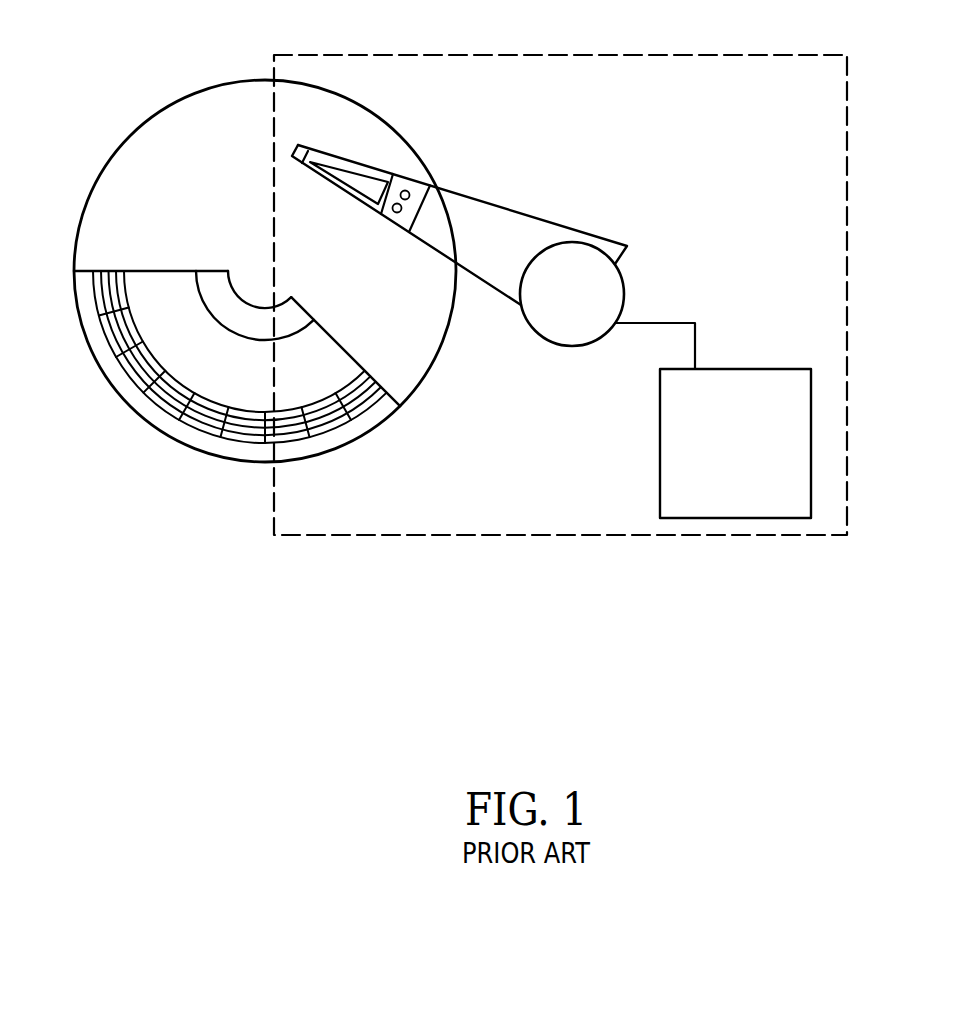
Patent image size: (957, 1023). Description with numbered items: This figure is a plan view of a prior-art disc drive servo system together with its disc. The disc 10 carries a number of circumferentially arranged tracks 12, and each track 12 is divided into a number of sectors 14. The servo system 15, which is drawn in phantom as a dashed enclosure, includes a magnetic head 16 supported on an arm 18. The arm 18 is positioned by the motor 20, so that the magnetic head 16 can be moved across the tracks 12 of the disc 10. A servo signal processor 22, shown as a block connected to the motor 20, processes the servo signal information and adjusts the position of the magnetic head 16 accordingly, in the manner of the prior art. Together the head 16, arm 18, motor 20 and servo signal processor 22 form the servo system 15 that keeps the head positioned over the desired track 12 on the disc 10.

The disc 10 is at (142, 122).
The tracks 12 is at (362, 366).
The sectors 14 is at (207, 403).
The servo system 15 is at (598, 55).
The magnetic head 16 is at (298, 146).
The arm 18 is at (410, 178).
The motor 20 is at (625, 298).
The servo signal processor 22 is at (660, 447).